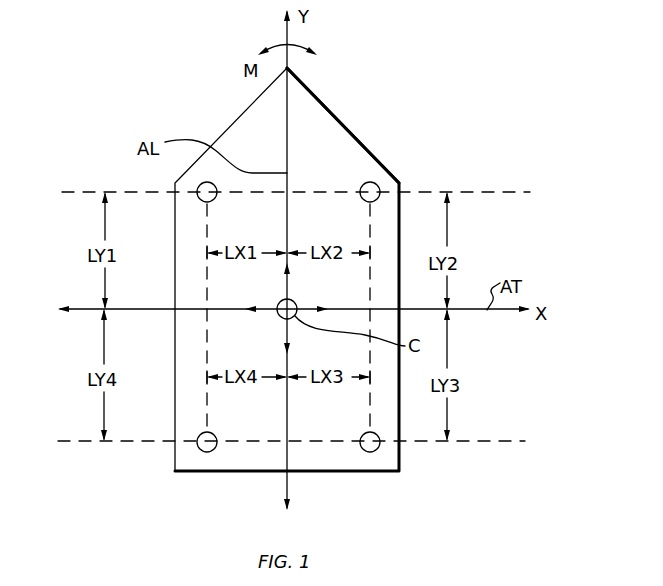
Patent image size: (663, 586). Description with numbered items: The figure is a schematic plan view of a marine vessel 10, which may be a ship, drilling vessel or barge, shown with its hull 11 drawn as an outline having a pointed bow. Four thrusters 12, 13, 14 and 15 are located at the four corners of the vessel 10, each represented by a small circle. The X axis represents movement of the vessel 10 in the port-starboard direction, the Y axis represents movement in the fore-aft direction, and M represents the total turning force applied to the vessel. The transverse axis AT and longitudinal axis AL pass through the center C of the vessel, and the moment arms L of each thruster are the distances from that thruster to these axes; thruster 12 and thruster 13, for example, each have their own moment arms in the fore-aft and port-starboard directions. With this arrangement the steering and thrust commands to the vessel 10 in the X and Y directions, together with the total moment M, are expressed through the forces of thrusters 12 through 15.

The marine vessel 10 is at (230, 116).
The hull 11 is at (342, 152).
The thruster 12 is at (202, 186).
The thruster 13 is at (386, 172).
The thruster 14 is at (372, 452).
The thruster 15 is at (204, 452).